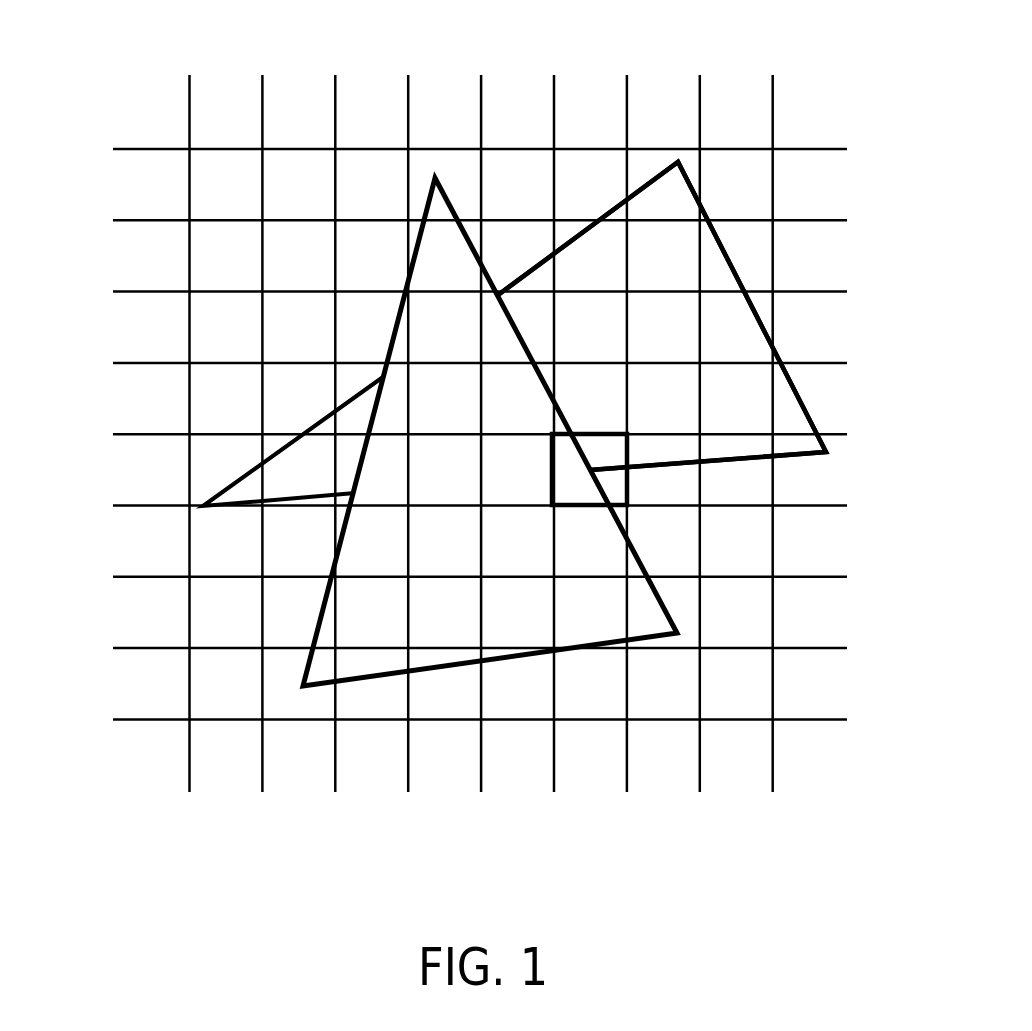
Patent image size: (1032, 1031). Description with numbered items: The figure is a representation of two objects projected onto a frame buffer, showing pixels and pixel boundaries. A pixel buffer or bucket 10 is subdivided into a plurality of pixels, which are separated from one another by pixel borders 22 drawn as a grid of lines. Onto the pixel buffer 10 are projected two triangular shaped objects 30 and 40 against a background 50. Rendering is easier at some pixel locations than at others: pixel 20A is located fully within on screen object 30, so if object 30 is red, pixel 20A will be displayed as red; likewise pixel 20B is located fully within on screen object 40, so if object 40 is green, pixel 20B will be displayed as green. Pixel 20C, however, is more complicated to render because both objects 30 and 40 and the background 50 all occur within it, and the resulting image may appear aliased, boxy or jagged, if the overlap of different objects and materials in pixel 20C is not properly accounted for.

The pixel buffer 10 is at (88, 84).
The pixel borders 22 is at (299, 143).
The background 50 is at (515, 172).
The triangular shaped object 30 is at (441, 672).
The triangular shaped object 40 is at (737, 256).
The pixel 20A is at (446, 474).
The pixel 20B is at (666, 319).
The pixel 20C is at (608, 481).